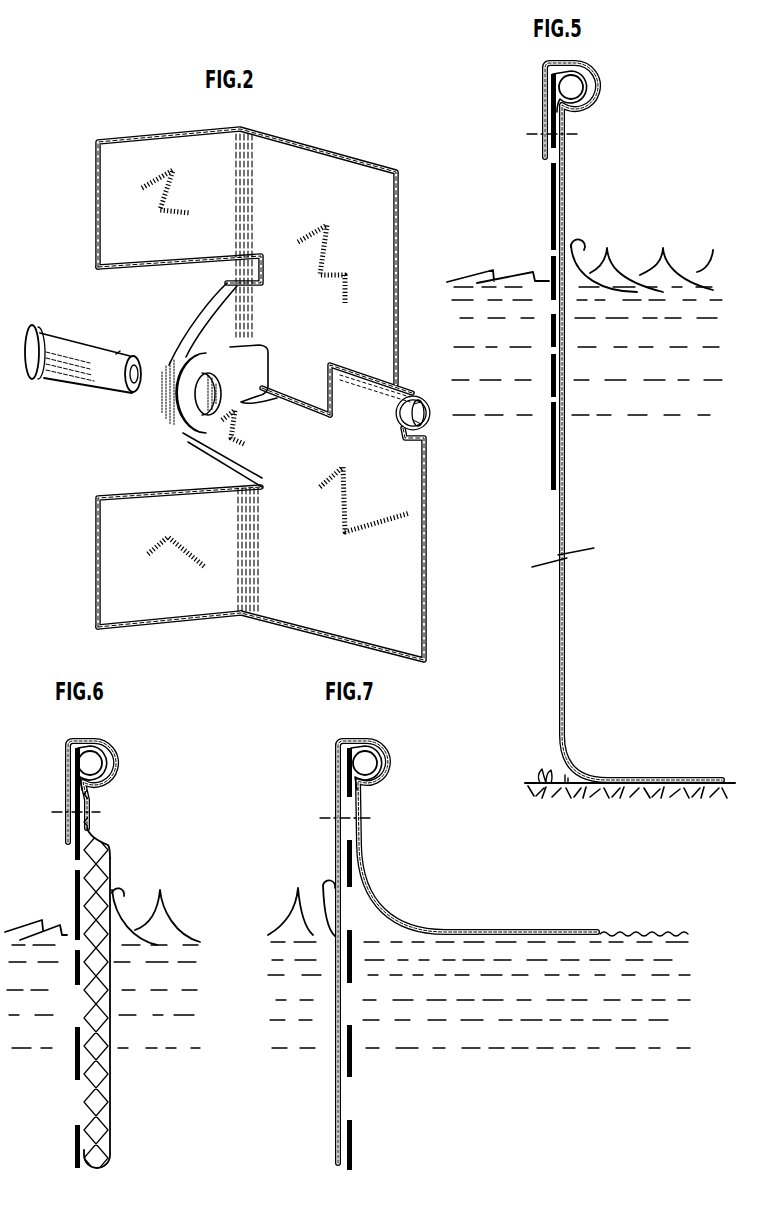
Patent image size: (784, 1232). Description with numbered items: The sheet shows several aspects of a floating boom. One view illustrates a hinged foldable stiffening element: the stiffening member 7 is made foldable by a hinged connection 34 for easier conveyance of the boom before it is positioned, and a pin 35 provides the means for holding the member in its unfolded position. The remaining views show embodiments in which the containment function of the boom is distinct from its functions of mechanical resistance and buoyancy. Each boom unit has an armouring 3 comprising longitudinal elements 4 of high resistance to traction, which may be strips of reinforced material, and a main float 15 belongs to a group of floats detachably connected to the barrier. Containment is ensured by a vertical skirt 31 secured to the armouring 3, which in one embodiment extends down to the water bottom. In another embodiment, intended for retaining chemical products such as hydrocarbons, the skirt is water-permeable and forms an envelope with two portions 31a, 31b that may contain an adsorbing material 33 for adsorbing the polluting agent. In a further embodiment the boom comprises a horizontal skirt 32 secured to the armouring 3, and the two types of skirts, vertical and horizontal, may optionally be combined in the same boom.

In FIG. 5, the armouring 3 is at (604, 407).
In FIG. 6, the armouring 3 is at (102, 965).
In FIG. 7, the armouring 3 is at (458, 943).
In FIG. 5, the longitudinal elements 4 is at (535, 282).
In FIG. 6, the longitudinal elements 4 is at (65, 958).
In FIG. 7, the longitudinal elements 4 is at (370, 959).
In FIG. 2, the stiffening member 7 is at (261, 384).
In FIG. 5, the main float 15 is at (593, 66).
In FIG. 6, the main float 15 is at (120, 746).
In FIG. 7, the main float 15 is at (394, 746).
In FIG. 5, the vertical skirt 31 is at (622, 421).
In FIG. 6, the envelope portion 31a is at (135, 834).
In FIG. 6, the envelope portion 31b is at (134, 990).
In FIG. 7, the horizontal skirt 32 is at (467, 952).
In FIG. 6, the adsorbing material 33 is at (129, 990).
In FIG. 2, the hinged connection 34 is at (399, 397).
In FIG. 2, the pin 35 is at (83, 380).